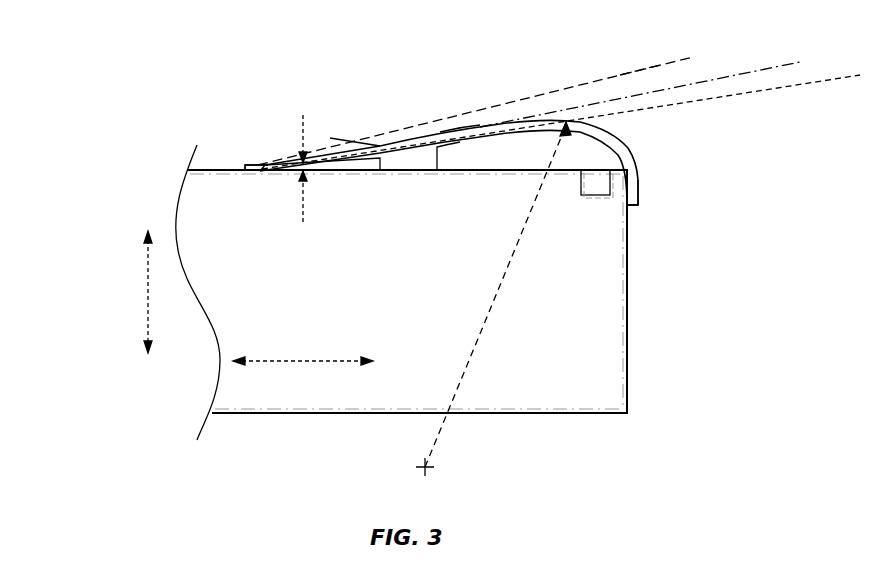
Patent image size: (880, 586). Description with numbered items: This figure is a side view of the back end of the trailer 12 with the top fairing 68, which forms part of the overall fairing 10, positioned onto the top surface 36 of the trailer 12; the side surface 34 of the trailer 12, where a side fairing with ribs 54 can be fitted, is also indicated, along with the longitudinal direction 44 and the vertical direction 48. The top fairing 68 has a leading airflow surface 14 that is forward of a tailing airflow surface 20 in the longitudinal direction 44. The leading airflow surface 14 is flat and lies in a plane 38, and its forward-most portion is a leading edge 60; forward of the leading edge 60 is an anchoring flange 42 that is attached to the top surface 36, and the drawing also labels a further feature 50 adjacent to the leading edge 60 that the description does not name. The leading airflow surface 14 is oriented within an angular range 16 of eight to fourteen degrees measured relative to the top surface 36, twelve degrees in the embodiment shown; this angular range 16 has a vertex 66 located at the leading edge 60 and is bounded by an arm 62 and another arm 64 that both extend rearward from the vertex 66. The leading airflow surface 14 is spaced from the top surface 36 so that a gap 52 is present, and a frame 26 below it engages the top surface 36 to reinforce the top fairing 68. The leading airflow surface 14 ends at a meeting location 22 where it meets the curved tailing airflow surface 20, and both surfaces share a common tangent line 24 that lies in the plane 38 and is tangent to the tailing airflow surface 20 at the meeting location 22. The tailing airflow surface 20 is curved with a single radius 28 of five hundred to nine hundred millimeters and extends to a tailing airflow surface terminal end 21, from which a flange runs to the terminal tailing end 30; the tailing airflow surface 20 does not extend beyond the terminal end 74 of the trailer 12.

The fairing 10 is at (515, 162).
The trailer 12 is at (611, 378).
The leading airflow surface 14 is at (342, 109).
The angular range 16 is at (678, 94).
The tailing airflow surface 20 is at (515, 157).
The tailing airflow surface terminal end 21 is at (638, 172).
The meeting location 22 is at (478, 126).
The common tangent line 24 is at (757, 69).
The frame 26 is at (408, 161).
The radius 28 is at (492, 303).
The terminal tailing end 30 is at (630, 207).
The side surface 34 is at (313, 302).
The top surface 36 is at (217, 160).
The plane 38 is at (352, 142).
The anchoring flange 42 is at (258, 172).
The longitudinal direction 44 is at (302, 362).
The vertical direction 48 is at (148, 292).
The lower edge 50 is at (262, 173).
The gap 52 is at (303, 207).
The ribs 54 is at (431, 186).
The leading edge 60 is at (258, 168).
The arm 62 is at (783, 88).
The arm 64 is at (637, 72).
The vertex 66 is at (263, 164).
The top fairing 68 is at (637, 162).
The terminal end 74 is at (640, 319).